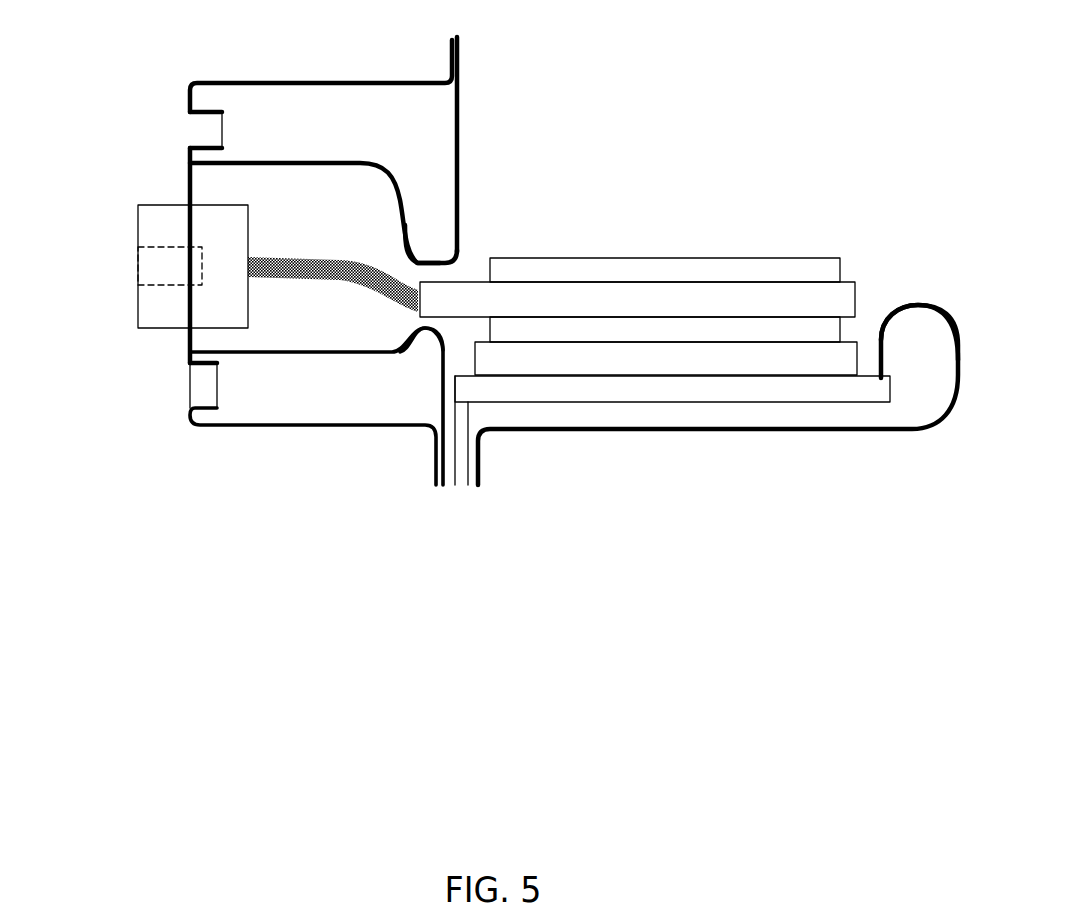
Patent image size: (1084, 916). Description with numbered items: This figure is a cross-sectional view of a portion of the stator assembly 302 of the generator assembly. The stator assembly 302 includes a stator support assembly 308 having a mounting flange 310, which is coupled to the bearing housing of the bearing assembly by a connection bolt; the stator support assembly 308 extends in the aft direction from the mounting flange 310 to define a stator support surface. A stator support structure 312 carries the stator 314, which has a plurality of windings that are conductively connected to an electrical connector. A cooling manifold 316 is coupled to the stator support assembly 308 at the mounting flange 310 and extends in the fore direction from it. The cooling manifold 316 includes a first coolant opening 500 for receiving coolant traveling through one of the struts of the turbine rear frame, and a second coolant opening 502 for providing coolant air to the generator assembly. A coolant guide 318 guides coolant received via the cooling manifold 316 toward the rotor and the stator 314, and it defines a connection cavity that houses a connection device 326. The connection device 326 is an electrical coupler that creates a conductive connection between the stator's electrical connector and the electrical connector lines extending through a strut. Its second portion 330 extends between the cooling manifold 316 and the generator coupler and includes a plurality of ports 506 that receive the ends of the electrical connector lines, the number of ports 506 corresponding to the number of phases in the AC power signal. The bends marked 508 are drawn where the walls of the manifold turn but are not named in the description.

The stator assembly 302 is at (714, 76).
The stator support assembly 308 is at (750, 431).
The mounting flange 310 is at (468, 481).
The stator support structure 312 is at (635, 403).
The stator 314 is at (810, 257).
The cooling manifold 316 is at (337, 77).
The coolant guide 318 is at (298, 160).
The connection device 326 is at (168, 197).
The second portion 330 is at (138, 315).
The first coolant opening 500 is at (197, 137).
The second coolant opening 502 is at (203, 388).
The ports 506 is at (138, 263).
The bend 508 is at (443, 258).